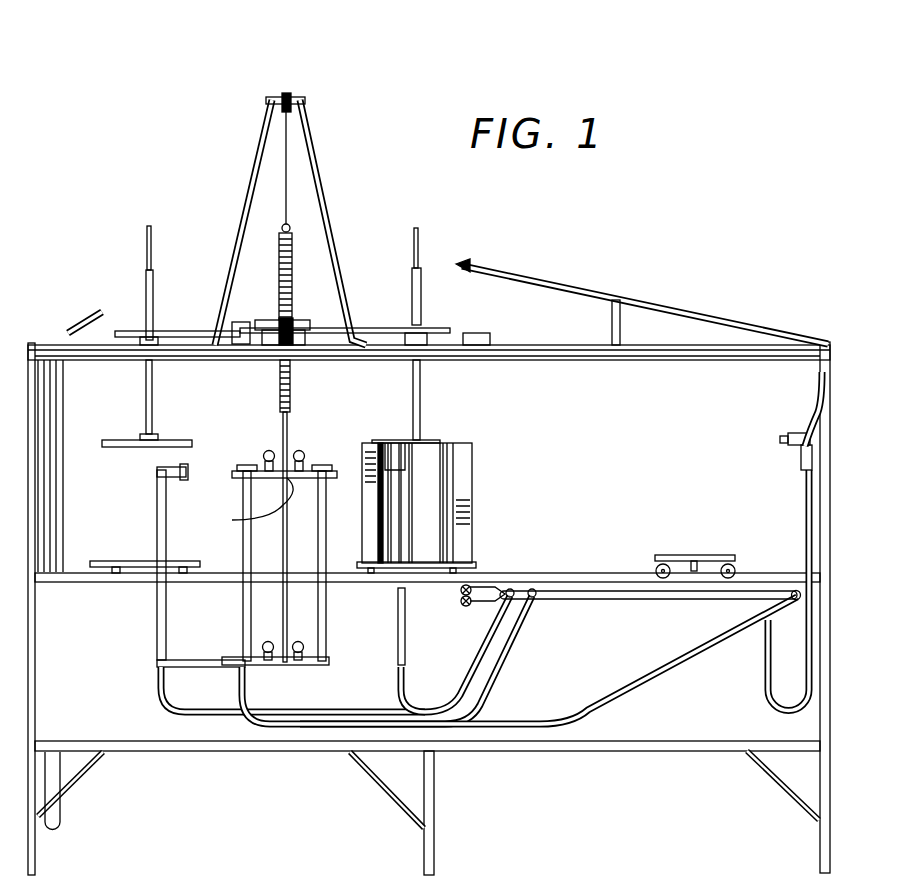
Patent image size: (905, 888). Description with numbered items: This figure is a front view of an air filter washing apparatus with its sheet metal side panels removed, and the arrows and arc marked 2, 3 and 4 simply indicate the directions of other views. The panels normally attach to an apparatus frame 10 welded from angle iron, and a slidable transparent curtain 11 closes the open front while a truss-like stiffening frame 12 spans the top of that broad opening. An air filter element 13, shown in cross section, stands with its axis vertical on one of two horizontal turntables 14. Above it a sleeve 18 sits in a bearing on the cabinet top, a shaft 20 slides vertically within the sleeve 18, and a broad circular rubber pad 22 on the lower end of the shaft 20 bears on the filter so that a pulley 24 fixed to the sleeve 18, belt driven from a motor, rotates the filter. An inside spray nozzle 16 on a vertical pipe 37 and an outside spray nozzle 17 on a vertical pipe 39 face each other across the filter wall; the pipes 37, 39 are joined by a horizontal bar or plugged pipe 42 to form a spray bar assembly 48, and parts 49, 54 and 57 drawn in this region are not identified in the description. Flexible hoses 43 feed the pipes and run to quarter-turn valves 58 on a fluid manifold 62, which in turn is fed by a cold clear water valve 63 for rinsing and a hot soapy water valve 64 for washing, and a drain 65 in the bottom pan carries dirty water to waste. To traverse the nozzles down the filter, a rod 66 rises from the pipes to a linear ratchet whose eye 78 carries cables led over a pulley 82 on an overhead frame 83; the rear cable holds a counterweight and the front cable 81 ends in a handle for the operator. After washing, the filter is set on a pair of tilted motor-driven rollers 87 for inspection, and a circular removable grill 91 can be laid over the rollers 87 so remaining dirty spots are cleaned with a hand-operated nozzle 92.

The section line 2- 2 is at (843, 65).
The section line 3- 3 is at (18, 887).
The view arc 4 is at (128, 207).
The apparatus frame 10 is at (598, 751).
The slidable transparent curtain 11 is at (65, 500).
The truss-like stiffening frame 12 is at (590, 292).
The air filter element 13 is at (475, 473).
The turntable 14 is at (480, 562).
The inside spray nozzle 16 is at (405, 442).
The outside spray nozzle 17 is at (240, 467).
The sleeve 18 is at (153, 290).
The shaft 20 is at (152, 234).
The circular rubber pad 22 is at (166, 440).
The pulley 24 is at (128, 330).
The vertical pipe 37 is at (166, 512).
The vertical pipe 39 is at (326, 506).
The horizontal bar or plugged pipe 42 is at (191, 660).
The flexible hoses 43 is at (498, 640).
The spray bar assembly 48 is at (289, 430).
The wire 49 is at (249, 503).
The lower valve 54 is at (297, 641).
The upper valve 57 is at (300, 450).
The quarter-turn valves 58 is at (533, 598).
The fluid manifold 62 is at (622, 600).
The cold clear water valve 63 is at (461, 590).
The hot soapy water valve 64 is at (461, 603).
The drain 65 is at (60, 803).
The rod 66 is at (278, 420).
The eye 78 is at (290, 232).
The cable 81 is at (286, 182).
The pulley 82 is at (288, 93).
The frame 83 is at (325, 188).
The rollers 87 is at (656, 571).
The circular removable grill 91 is at (690, 555).
The hand-operated nozzle 92 is at (788, 438).